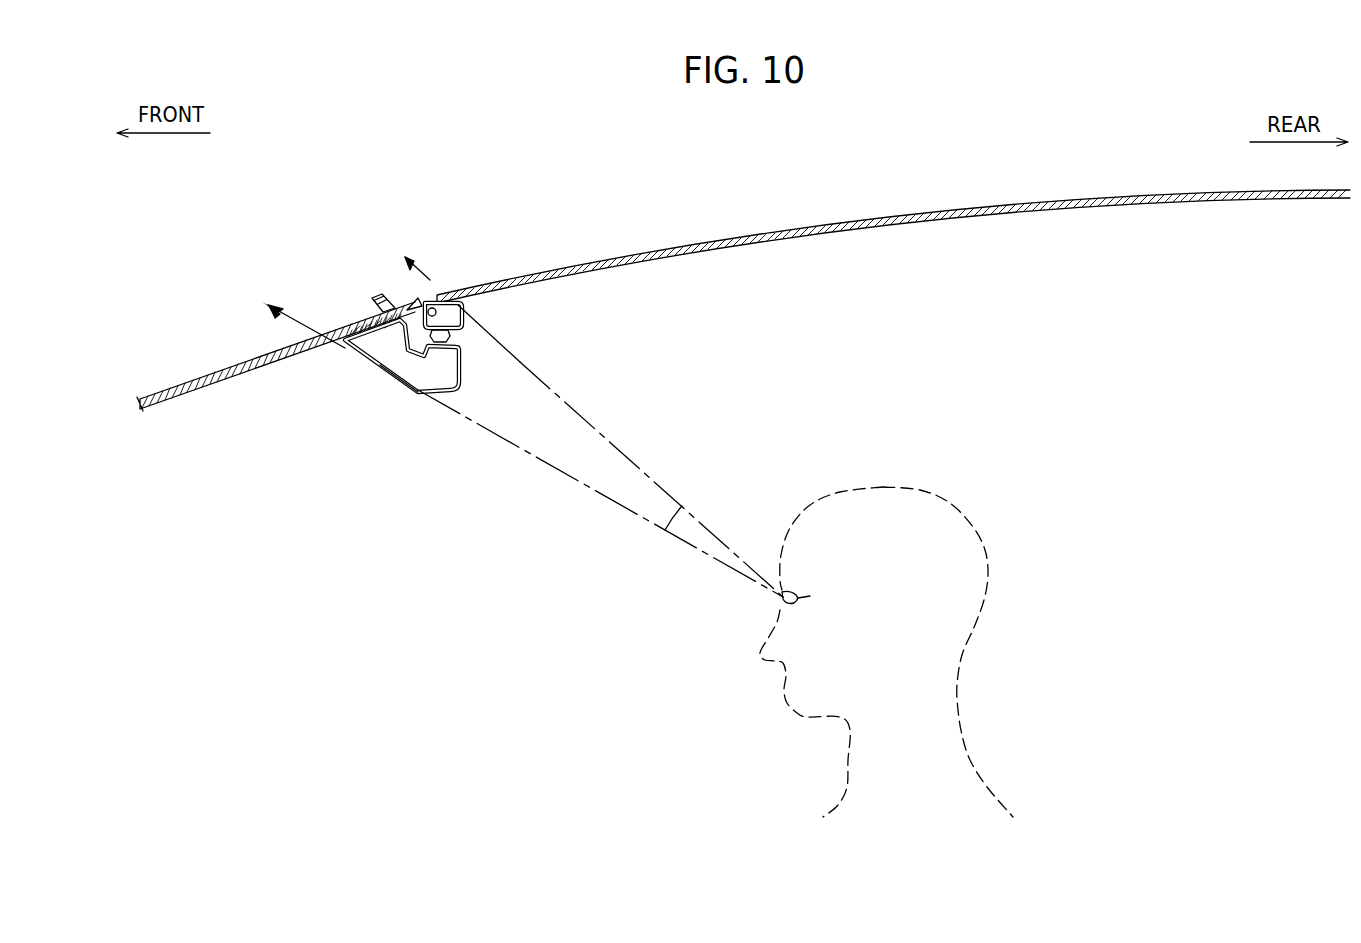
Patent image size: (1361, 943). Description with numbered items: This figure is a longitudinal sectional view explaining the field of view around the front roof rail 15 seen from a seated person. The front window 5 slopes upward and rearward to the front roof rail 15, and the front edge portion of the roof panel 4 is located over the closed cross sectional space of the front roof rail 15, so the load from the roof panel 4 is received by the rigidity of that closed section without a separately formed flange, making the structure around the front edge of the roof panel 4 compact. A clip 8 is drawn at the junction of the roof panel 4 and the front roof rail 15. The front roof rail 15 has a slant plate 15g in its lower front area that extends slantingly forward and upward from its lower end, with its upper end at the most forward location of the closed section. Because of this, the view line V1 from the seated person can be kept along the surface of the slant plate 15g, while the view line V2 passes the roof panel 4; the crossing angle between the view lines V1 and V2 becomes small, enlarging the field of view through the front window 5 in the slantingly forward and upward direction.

The roof panel 4 is at (913, 214).
The front window 5 is at (245, 364).
The clip 8 is at (474, 337).
The front roof rail 15 is at (367, 392).
The slant plate 15g is at (397, 386).
The view line V1 is at (612, 500).
The view line V2 is at (627, 453).